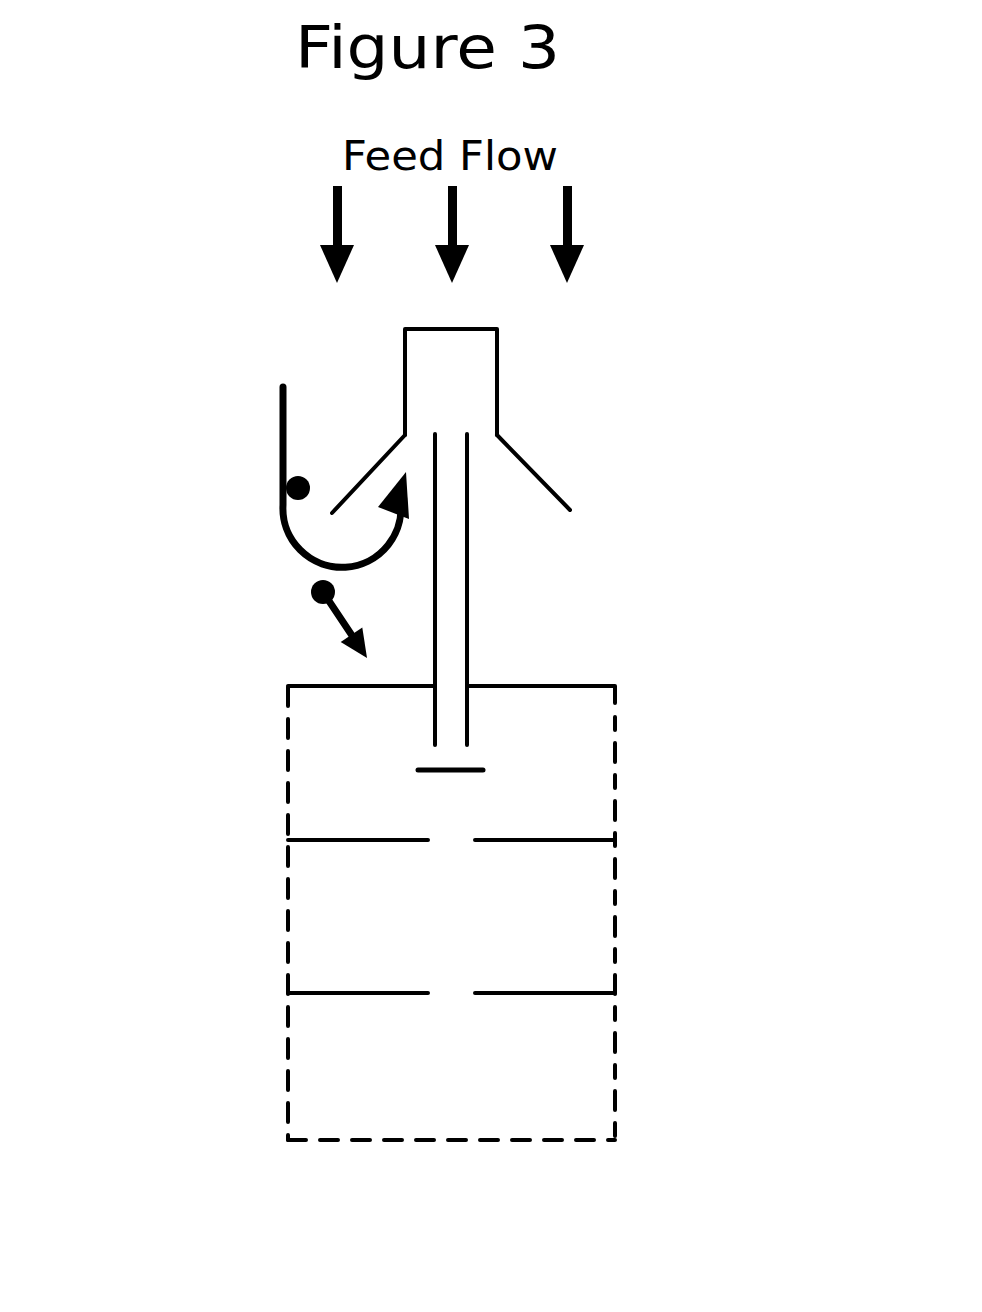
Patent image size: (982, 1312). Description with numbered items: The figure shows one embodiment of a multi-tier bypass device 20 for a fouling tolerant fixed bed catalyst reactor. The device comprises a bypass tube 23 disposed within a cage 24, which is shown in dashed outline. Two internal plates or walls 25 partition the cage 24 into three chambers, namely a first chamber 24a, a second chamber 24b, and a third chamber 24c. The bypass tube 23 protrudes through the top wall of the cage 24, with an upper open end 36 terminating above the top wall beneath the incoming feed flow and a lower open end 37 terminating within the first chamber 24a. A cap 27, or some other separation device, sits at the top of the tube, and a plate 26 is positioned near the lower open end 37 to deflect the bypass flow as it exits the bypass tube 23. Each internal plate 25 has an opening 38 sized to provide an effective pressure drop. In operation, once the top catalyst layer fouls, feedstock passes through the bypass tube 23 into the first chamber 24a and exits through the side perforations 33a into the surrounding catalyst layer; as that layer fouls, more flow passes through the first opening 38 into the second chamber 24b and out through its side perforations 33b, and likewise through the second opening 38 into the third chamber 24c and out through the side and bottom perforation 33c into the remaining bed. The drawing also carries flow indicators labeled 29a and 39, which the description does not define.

The multi-tier bypass device 20 is at (682, 595).
The bypass tube 23 is at (467, 575).
The cage 24 is at (635, 907).
The first chamber 24a is at (345, 805).
The second chamber 24b is at (332, 922).
The third chamber 24c is at (597, 1103).
The internal plate 25 is at (562, 835).
The plate 26 is at (475, 760).
The cap 27 is at (497, 347).
The return flow path 29a is at (281, 510).
The side perforations 33a is at (620, 770).
The side perforations 33b is at (622, 873).
The side and bottom perforation 33c is at (623, 1065).
The upper open end 36 is at (447, 427).
The lower open end 37 is at (453, 750).
The opening 38 is at (452, 847).
The downward flow path 39 is at (307, 607).